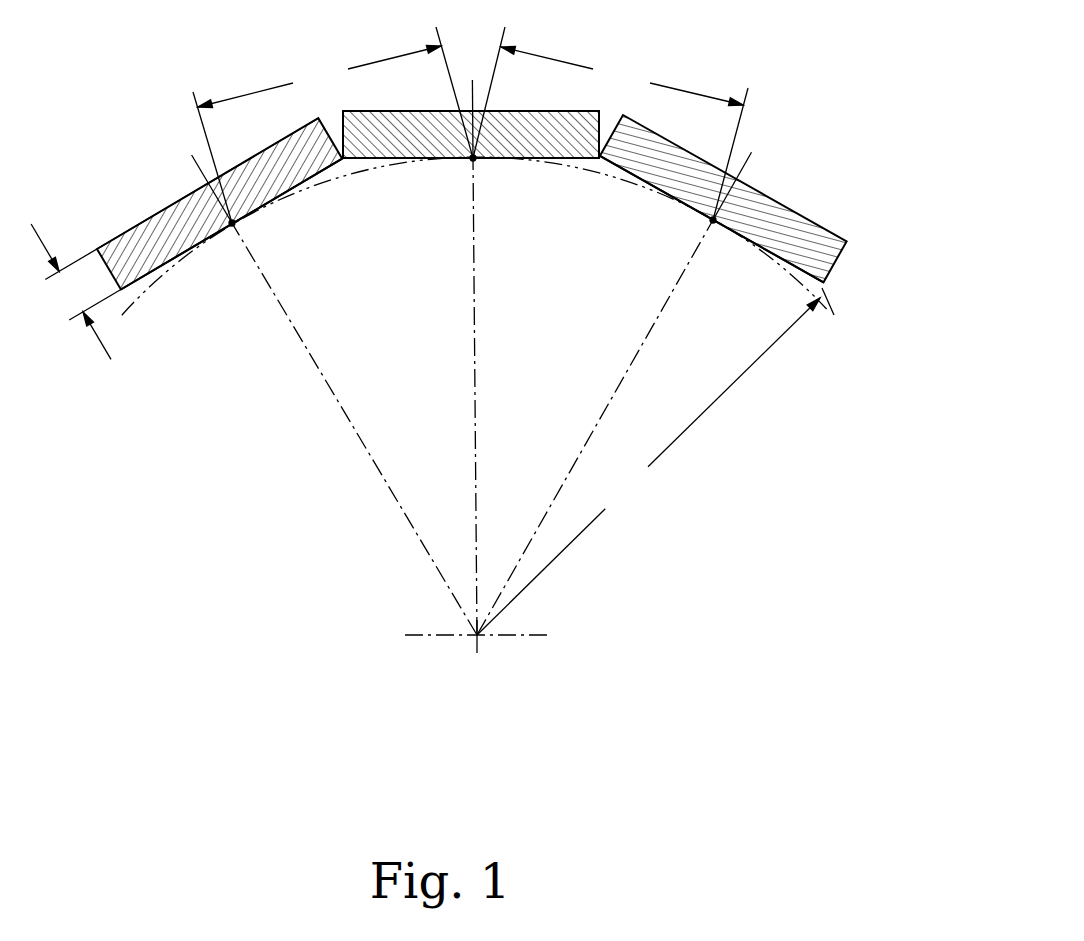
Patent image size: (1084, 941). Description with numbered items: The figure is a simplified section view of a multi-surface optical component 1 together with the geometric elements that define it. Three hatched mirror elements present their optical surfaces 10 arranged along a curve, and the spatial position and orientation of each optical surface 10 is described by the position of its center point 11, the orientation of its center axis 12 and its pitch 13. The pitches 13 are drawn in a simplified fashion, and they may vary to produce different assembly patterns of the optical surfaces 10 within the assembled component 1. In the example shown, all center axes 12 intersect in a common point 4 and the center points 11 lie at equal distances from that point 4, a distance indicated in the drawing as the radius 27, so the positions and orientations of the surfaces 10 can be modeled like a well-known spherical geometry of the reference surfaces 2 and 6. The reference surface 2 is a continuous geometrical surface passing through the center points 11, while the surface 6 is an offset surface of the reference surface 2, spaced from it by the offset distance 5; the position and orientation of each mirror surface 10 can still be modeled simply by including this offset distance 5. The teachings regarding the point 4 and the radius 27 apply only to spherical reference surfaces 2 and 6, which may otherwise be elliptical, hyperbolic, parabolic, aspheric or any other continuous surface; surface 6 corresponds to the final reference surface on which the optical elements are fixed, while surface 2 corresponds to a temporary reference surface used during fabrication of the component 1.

The multi-surface optical component 1 is at (833, 273).
The reference surface 2 is at (113, 318).
The common point 4 is at (477, 636).
The offset distance 5 is at (76, 291).
The offset surface 6 is at (85, 250).
The optical surfaces 10 is at (318, 174).
The center points 11 is at (232, 224).
The center axes 12 is at (352, 425).
The pitches 13 is at (470, 125).
The radius 27 is at (655, 461).